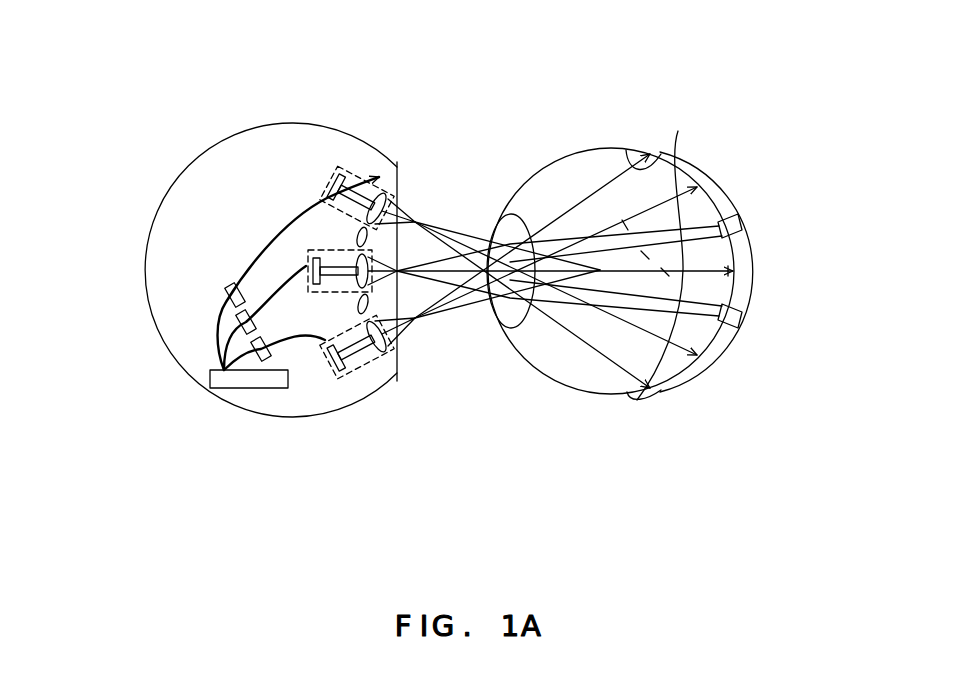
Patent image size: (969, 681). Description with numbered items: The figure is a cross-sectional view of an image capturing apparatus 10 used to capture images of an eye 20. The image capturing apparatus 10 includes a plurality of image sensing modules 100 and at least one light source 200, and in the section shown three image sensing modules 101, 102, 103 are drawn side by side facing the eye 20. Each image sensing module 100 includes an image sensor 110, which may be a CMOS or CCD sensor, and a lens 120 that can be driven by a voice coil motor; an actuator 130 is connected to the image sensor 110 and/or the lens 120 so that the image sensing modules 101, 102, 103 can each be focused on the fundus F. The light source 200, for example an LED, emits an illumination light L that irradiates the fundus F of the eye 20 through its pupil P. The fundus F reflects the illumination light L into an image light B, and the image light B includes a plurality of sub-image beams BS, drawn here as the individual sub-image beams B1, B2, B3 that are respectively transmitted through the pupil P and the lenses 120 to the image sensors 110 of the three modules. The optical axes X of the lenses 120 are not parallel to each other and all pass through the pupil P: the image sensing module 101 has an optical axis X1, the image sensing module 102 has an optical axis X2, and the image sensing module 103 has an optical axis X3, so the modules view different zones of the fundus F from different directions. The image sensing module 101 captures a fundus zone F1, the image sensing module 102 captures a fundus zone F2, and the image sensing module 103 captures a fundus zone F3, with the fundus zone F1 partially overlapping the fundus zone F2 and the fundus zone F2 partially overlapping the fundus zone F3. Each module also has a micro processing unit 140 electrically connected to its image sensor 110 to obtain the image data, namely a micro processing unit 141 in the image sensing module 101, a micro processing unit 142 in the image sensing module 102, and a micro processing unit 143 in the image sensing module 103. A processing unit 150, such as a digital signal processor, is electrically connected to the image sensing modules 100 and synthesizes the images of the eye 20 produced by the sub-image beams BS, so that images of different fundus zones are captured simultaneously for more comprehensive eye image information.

The image capturing apparatus 10 is at (449, 285).
The eye 20 is at (620, 274).
The image sensing module 100 is at (467, 282).
The image sensing module 101 is at (402, 228).
The image sensing module 102 is at (316, 184).
The image sensing module 103 is at (305, 227).
The image sensor 110 is at (364, 318).
The lens 120 is at (547, 344).
The actuator 130 is at (352, 204).
The micro processing unit 140 is at (212, 273).
The micro processing unit 141 is at (211, 352).
The micro processing unit 142 is at (202, 318).
The micro processing unit 143 is at (238, 273).
The processing unit 150 is at (213, 390).
The light source 200 is at (366, 182).
The image light B is at (610, 264).
The sub-image beams BS is at (550, 211).
The first light beam B1 is at (556, 197).
The second light beam B2 is at (550, 197).
The third light beam B3 is at (556, 232).
The fundus F is at (681, 265).
The fundus zone F1 is at (665, 320).
The fundus zone F2 is at (774, 270).
The fundus zone F3 is at (665, 214).
The illumination light L is at (660, 250).
The pupil P is at (511, 321).
The optical axes X is at (599, 374).
The optical axis X1 is at (635, 373).
The optical axis X2 is at (609, 365).
The optical axis X3 is at (581, 349).